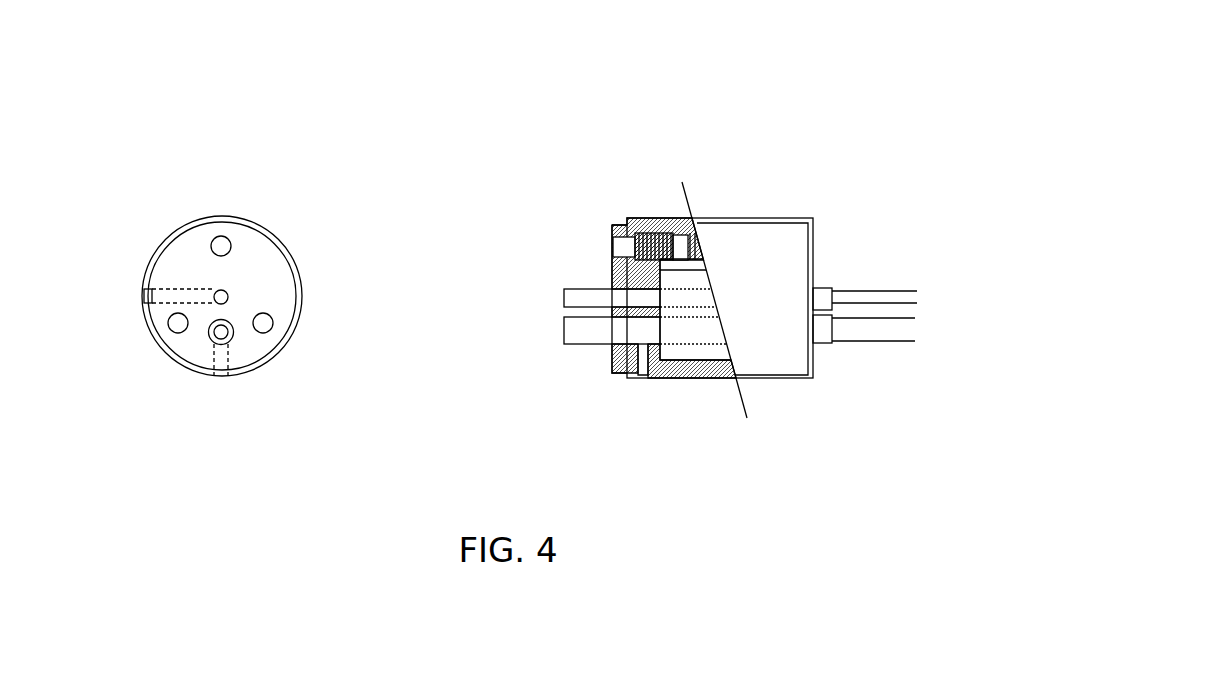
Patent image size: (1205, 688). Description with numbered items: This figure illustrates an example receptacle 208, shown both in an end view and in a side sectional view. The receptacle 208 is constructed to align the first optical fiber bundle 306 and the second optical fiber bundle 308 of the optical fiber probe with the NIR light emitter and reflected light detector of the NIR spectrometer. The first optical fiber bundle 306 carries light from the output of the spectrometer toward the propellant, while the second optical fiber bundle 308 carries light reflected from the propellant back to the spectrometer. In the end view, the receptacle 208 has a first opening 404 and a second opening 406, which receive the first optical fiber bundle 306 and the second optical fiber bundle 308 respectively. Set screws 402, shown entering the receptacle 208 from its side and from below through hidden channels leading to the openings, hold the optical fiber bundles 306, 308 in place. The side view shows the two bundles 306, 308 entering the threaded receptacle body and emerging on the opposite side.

The receptacle 208 is at (904, 100).
The first optical fiber bundle 306 is at (902, 271).
The second optical fiber bundle 308 is at (902, 356).
The set screw 402 is at (139, 285).
The first opening 404 is at (234, 284).
The second opening 406 is at (240, 338).